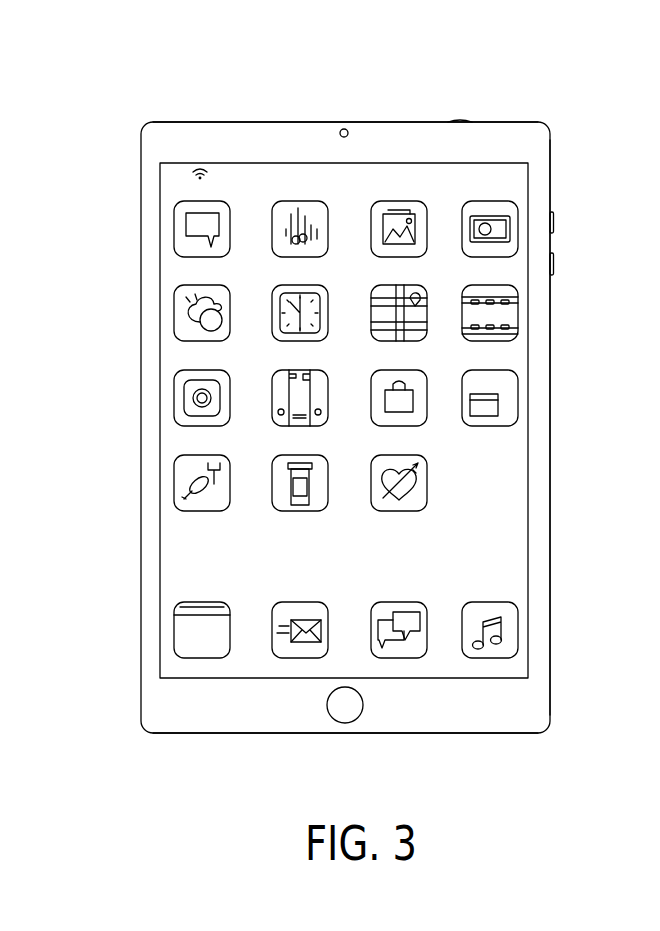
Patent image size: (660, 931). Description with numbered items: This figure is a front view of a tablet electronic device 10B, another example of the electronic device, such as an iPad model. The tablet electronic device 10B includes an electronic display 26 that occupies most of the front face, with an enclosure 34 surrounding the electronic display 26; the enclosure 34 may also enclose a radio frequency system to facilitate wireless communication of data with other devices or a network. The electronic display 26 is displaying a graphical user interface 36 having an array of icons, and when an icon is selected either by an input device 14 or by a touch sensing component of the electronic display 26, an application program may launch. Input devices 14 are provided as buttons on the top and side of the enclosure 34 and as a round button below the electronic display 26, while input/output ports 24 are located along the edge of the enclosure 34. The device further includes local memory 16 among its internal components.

The tablet electronic device 10B is at (147, 79).
The input devices 14 is at (462, 121).
The local memory 16 is at (345, 734).
The input/output ports 24 is at (217, 123).
The electronic display 26 is at (528, 421).
The enclosure 34 is at (550, 369).
The graphical user interface 36 is at (509, 495).